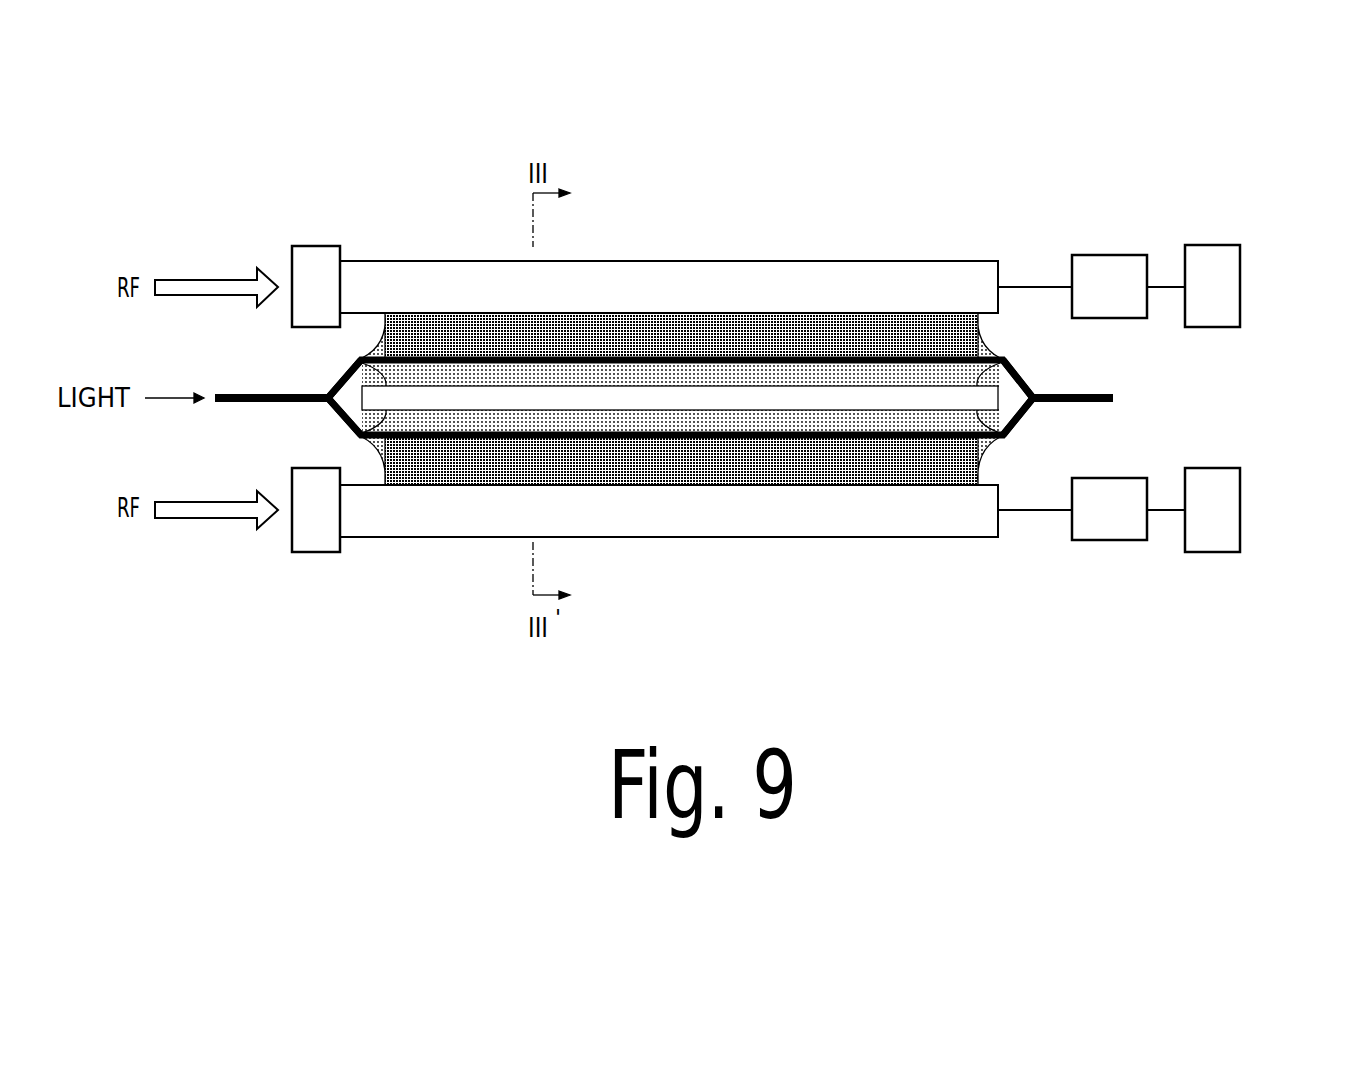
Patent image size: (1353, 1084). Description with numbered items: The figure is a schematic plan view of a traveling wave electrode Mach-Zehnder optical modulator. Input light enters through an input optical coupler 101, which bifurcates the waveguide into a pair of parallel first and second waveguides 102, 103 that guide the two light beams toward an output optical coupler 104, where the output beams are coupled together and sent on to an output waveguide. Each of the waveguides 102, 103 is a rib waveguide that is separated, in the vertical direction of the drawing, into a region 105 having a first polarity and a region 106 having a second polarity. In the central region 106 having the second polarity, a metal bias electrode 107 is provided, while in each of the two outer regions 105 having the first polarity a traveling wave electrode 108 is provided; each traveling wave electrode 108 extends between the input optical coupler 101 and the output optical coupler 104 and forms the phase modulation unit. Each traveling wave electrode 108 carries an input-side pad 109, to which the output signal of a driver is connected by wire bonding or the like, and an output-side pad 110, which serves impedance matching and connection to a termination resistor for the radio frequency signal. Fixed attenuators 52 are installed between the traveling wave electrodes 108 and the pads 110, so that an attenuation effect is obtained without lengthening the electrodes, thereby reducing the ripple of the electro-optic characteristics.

The input optical coupler 101 is at (329, 388).
The first waveguide 102 is at (626, 357).
The second waveguide 103 is at (617, 436).
The output optical coupler 104 is at (1036, 392).
The region having first polarity 105 is at (693, 460).
The region having second polarity 106 is at (783, 418).
The metal bias electrode 107 is at (865, 400).
The traveling wave electrode 108 is at (945, 510).
The input-side pad 109 is at (293, 468).
The output-side pad 110 is at (1228, 300).
The fixed attenuator 52 is at (1133, 300).